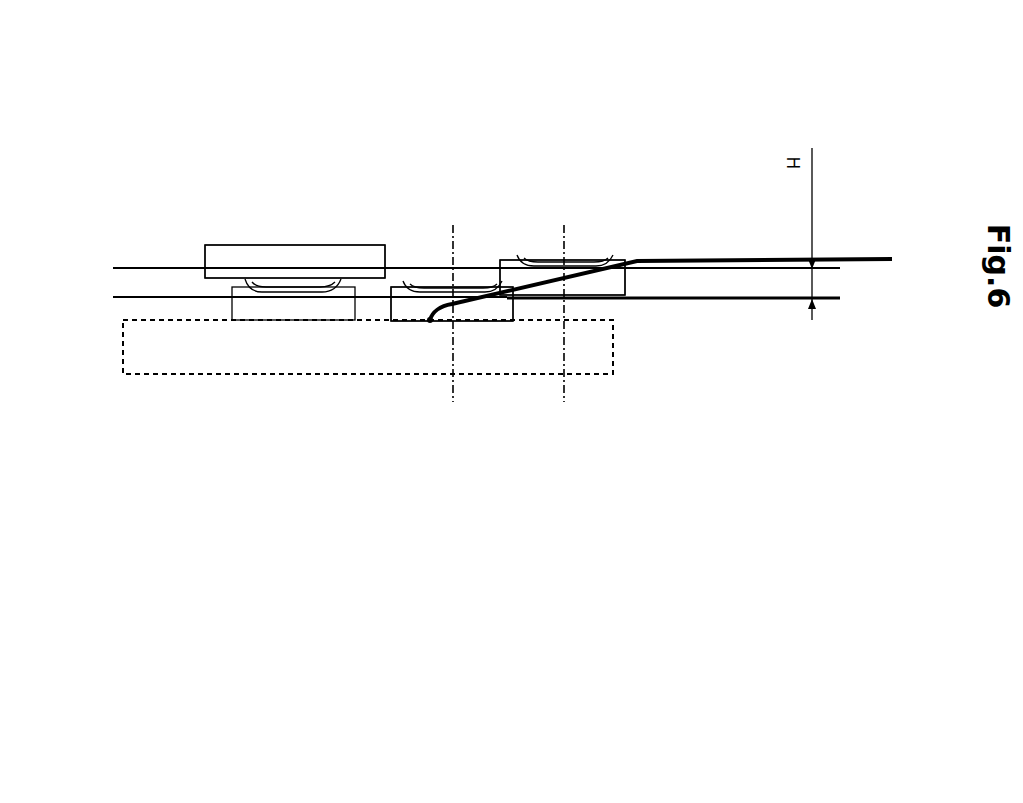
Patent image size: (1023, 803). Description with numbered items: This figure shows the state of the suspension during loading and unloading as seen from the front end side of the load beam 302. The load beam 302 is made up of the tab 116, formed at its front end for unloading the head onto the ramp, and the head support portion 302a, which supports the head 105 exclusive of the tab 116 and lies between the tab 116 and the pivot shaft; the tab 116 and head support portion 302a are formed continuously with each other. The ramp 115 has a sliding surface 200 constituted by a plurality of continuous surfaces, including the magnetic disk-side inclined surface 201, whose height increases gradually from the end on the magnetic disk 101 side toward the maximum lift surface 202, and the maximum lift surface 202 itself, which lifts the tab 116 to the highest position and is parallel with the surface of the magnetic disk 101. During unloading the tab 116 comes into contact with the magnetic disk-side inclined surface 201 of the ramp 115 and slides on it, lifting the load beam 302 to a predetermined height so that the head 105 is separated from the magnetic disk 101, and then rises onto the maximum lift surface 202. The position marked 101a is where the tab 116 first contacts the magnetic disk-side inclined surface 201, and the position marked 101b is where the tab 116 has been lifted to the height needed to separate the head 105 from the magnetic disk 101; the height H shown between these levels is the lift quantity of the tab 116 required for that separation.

The load beam 302 is at (236, 217).
The head support portion 302a is at (378, 246).
The head 105 is at (232, 300).
The tab 116 is at (303, 288).
The sliding surface 200 is at (755, 130).
The magnetic disk-side inclined surface 201 is at (617, 258).
The maximum lift surface 202 is at (725, 258).
The ramp 115 is at (868, 246).
The magnetic disk 101 is at (150, 365).
The position at which the tab first comes into contact with the magnetic disk-side i 101a is at (452, 380).
The position at which the tab is lifted up to a height required to separate the head 101b is at (562, 380).